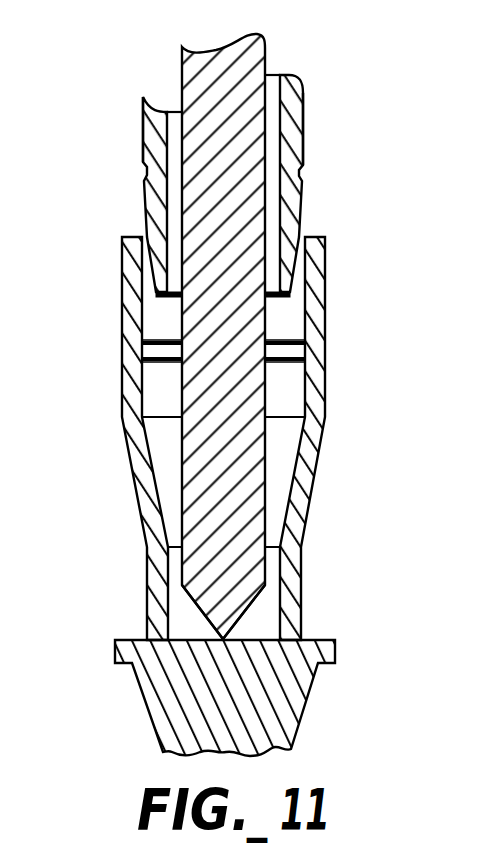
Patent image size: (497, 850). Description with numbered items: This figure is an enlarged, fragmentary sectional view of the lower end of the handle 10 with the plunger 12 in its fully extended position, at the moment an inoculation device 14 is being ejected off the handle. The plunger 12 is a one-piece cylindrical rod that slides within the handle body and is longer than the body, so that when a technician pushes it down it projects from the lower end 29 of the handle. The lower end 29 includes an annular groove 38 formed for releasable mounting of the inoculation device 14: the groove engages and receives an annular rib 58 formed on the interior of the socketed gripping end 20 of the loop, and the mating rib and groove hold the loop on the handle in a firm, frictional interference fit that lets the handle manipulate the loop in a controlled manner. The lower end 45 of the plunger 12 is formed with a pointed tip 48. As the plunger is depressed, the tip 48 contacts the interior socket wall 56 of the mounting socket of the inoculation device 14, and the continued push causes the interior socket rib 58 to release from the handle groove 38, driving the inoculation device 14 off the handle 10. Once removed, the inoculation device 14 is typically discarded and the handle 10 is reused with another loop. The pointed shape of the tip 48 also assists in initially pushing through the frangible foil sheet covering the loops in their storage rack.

The handle 10 is at (126, 147).
The plunger 12 is at (257, 410).
The inoculation device 14 is at (350, 653).
The socketed gripping end 20 is at (122, 443).
The lower end 29 is at (303, 122).
The annular groove 38 is at (300, 170).
The lower end 45 is at (267, 567).
The pointed tip 48 is at (203, 612).
The interior socket wall 56 is at (267, 632).
The annular rib 58 is at (292, 338).